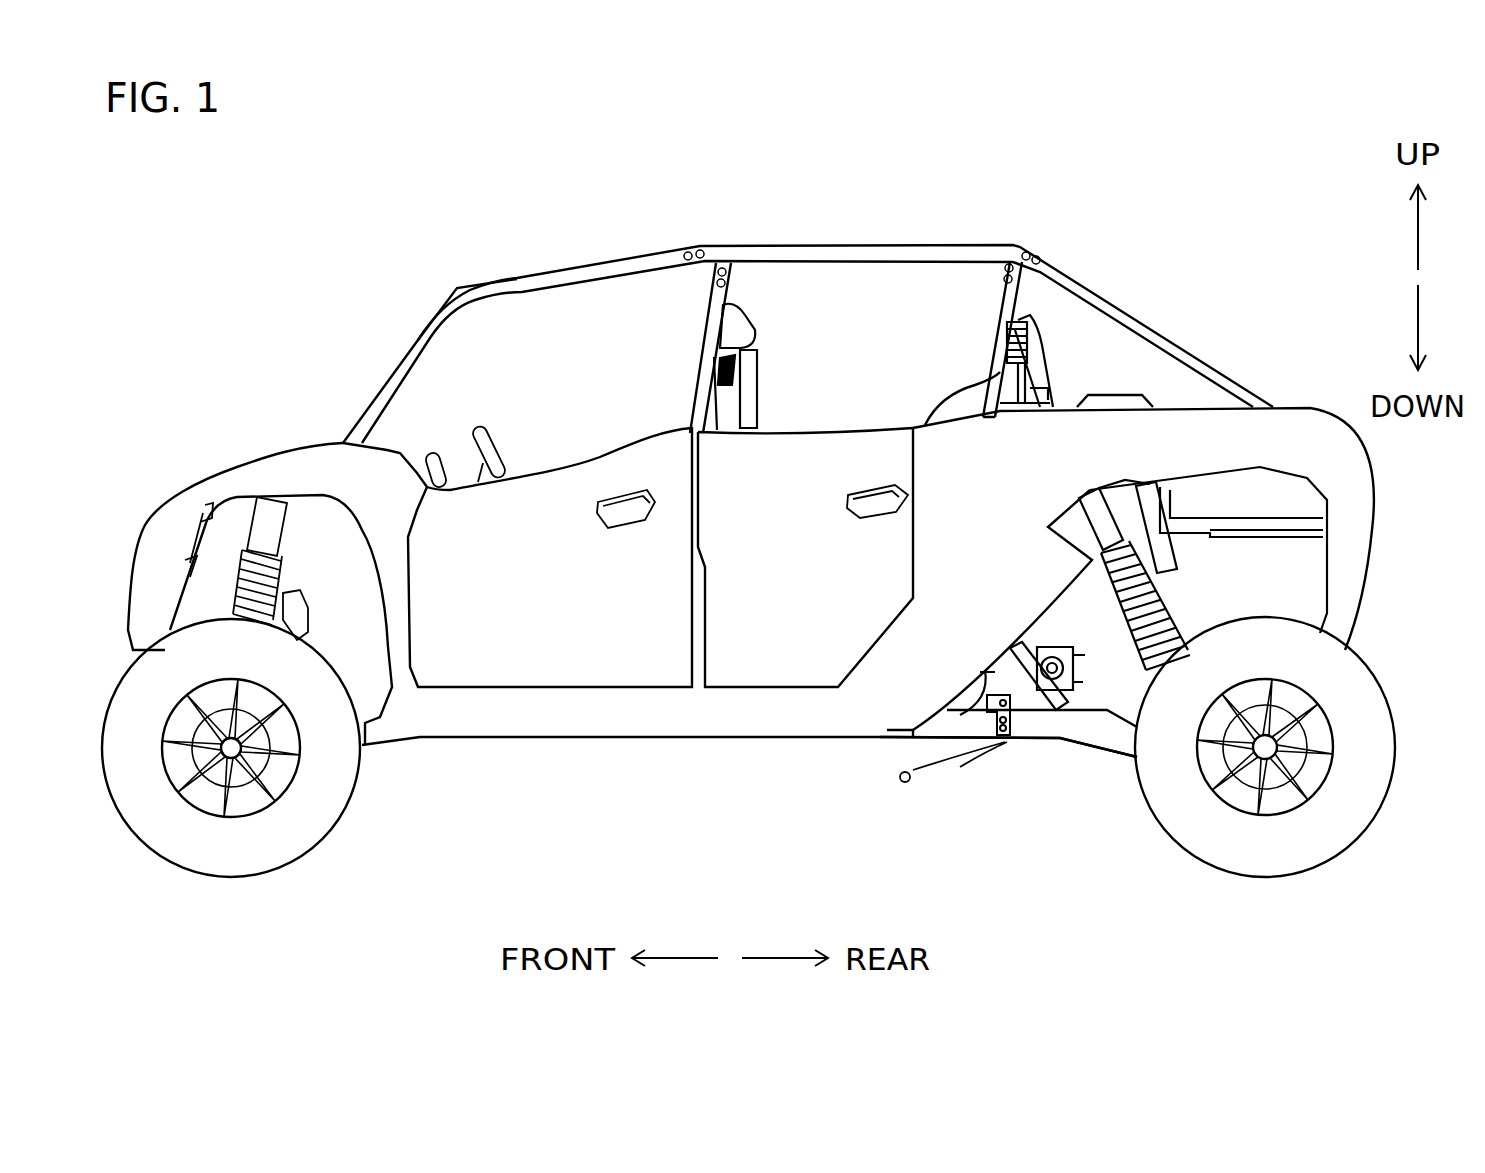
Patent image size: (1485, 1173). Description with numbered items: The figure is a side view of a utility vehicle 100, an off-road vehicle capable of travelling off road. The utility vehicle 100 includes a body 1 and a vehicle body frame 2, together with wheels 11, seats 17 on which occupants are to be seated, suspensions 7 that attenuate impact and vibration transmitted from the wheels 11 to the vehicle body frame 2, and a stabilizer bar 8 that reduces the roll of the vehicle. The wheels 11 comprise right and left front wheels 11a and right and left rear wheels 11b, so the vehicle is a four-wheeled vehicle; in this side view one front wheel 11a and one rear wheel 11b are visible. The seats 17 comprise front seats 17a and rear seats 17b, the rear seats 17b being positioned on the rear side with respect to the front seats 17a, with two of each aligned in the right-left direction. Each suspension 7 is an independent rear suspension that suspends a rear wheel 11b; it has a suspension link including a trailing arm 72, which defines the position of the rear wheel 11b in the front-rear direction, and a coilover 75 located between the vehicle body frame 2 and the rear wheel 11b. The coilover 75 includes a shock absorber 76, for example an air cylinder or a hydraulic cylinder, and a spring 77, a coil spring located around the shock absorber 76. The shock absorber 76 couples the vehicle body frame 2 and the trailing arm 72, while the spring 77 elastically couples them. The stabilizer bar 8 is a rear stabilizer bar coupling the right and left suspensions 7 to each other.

The utility vehicle 100 is at (300, 274).
The body 1 is at (310, 445).
The vehicle body frame 2 is at (562, 272).
The seats 17 is at (760, 400).
The front seats 17a is at (758, 408).
The rear seats 17b is at (1040, 380).
The wheels 11 is at (748, 777).
The front wheels 11a is at (305, 855).
The rear wheels 11b is at (1185, 880).
The suspension 7 is at (1055, 738).
The stabilizer bar 8 is at (950, 712).
The trailing arm 72 is at (985, 740).
The coilover 75 is at (1134, 647).
The shock absorber 76 is at (1130, 507).
The spring 77 is at (1160, 612).